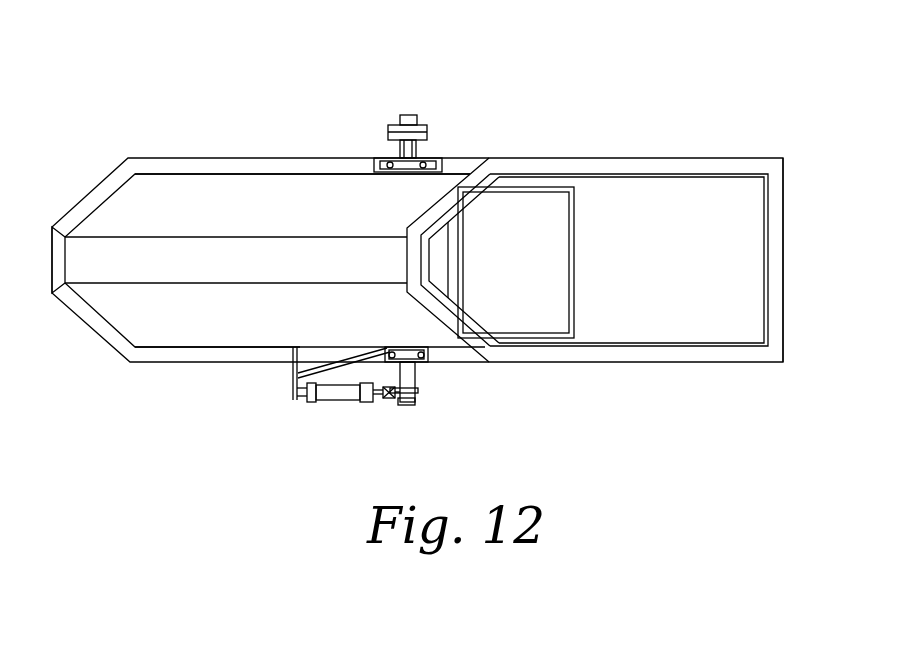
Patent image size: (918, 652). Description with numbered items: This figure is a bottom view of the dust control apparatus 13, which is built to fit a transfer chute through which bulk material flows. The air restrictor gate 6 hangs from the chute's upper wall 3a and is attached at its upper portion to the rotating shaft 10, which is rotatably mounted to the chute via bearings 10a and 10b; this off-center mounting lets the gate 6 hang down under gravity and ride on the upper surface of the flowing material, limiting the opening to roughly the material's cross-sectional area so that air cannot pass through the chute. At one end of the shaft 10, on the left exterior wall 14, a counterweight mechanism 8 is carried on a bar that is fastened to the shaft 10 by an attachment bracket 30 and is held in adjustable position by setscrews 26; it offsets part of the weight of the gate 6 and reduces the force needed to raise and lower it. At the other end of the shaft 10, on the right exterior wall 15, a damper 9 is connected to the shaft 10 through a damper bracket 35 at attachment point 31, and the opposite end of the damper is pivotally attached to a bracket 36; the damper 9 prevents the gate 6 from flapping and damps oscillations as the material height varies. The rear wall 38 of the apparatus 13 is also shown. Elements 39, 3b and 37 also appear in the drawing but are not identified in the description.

The dust control apparatus 13 is at (212, 110).
The right exterior wall 15 is at (310, 157).
The left exterior wall 14 is at (190, 362).
The front end 39 is at (52, 293).
The air restrictor gate 6 is at (462, 263).
The upper wall 3a is at (427, 262).
The inner container 3b is at (573, 257).
The compartment 37 is at (648, 188).
The rear wall 38 is at (778, 277).
The counterweight mechanism 8 is at (423, 123).
The adjusting setscrews 26 is at (408, 114).
The attachment point 31 is at (385, 130).
The bearing 10a is at (420, 157).
The bearing 10b is at (398, 349).
The rotating shaft 10 is at (415, 380).
The attachment bracket 30 is at (405, 405).
The bracket 36 is at (292, 372).
The damper 9 is at (324, 414).
The damper bracket 35 is at (388, 400).